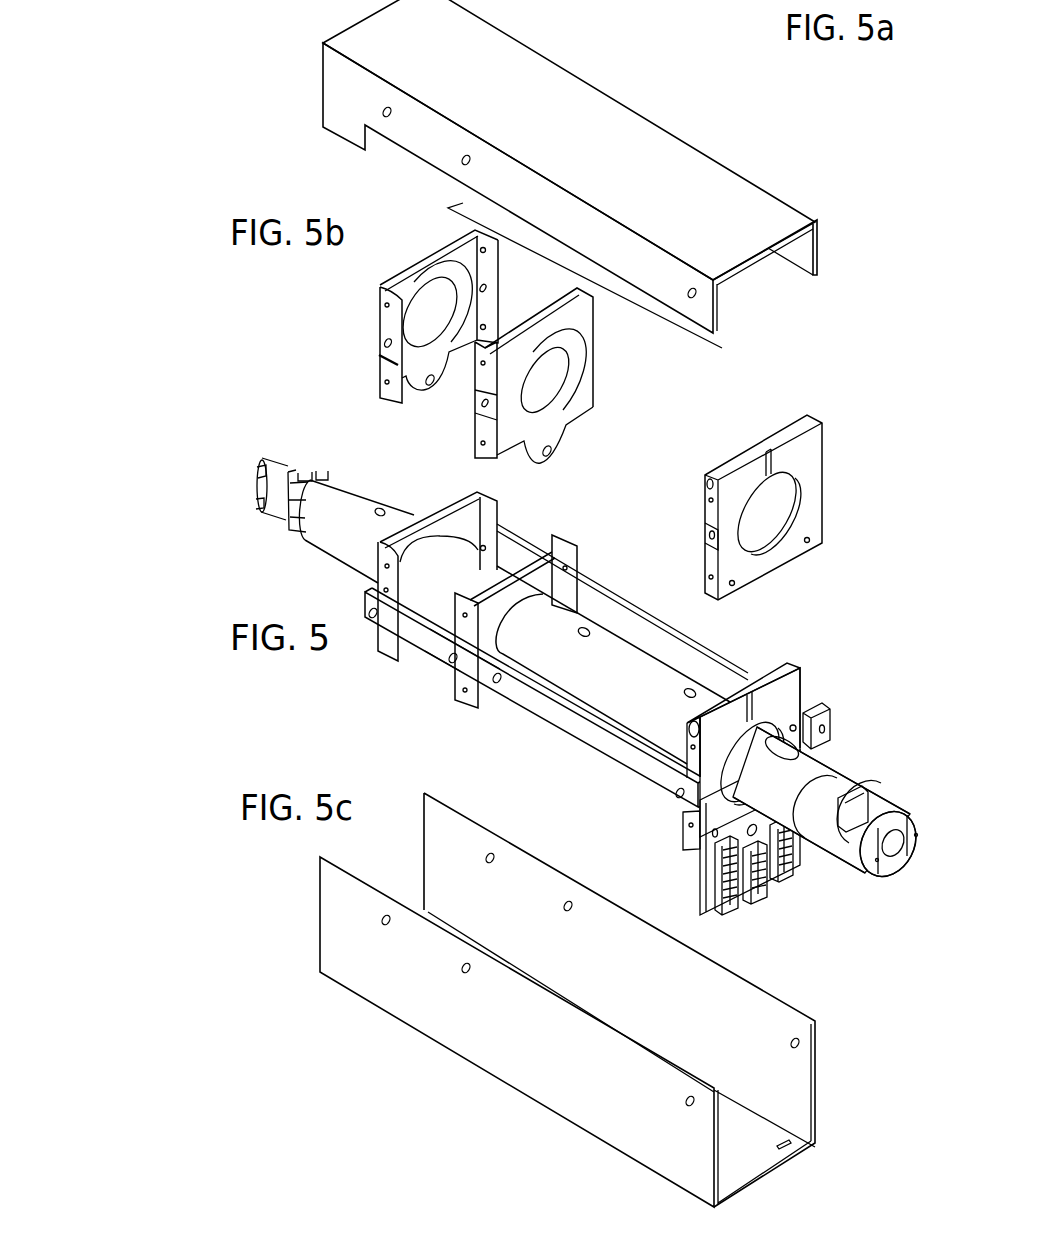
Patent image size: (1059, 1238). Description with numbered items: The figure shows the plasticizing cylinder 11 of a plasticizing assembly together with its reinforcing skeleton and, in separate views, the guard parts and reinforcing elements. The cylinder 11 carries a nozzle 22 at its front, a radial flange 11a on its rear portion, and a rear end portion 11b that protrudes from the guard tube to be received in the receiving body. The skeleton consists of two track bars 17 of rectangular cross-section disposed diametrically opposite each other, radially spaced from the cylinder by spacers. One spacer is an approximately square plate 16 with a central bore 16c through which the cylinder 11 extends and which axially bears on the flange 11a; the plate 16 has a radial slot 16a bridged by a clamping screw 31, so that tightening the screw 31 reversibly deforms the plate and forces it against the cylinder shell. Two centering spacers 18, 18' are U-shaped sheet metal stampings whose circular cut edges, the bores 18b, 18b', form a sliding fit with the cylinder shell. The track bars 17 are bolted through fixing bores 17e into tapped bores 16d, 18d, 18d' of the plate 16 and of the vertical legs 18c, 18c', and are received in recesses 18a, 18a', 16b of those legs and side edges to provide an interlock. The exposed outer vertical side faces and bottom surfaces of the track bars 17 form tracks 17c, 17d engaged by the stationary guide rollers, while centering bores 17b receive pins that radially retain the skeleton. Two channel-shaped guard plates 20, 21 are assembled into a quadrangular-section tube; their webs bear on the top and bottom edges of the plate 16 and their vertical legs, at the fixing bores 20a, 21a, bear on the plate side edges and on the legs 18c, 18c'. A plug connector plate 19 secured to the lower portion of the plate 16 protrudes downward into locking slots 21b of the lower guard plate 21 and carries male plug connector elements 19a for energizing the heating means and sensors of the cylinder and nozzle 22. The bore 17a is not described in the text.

In FIG. 5, the plasticizing cylinder 11 is at (350, 532).
In FIG. 5, the radial flange 11a is at (806, 709).
In FIG. 5, the rear end portion 11b is at (830, 778).
In FIG. 5b, the plate 16 is at (779, 494).
In FIG. 5, the plate 16 is at (754, 725).
In FIG. 5b, the radial slot 16a is at (760, 449).
In FIG. 5, the radial slot 16a is at (749, 696).
In FIG. 5b, the recess 16b is at (823, 485).
In FIG. 5b, the bore 16c is at (770, 540).
In FIG. 5b, the tapped bore 16d is at (708, 546).
In FIG. 5, the track bar 17 is at (521, 695).
In FIG. 5, the rail hole 17a is at (497, 683).
In FIG. 5, the centering bore 17b is at (687, 826).
In FIG. 5, the track 17c is at (425, 646).
In FIG. 5, the track 17d is at (440, 664).
In FIG. 5, the fixing bore 17e is at (372, 618).
In FIG. 5b, the centering spacer 18 is at (411, 298).
In FIG. 5, the centering spacer 18 is at (426, 585).
In FIG. 5b, the centering spacer 18' is at (546, 396).
In FIG. 5, the centering spacer 18' is at (541, 593).
In FIG. 5b, the recess 18a is at (429, 310).
In FIG. 5b, the recess 18a' is at (539, 396).
In FIG. 5b, the bore 18b is at (408, 291).
In FIG. 5b, the bore 18b' is at (586, 386).
In FIG. 5b, the vertical leg 18c is at (429, 319).
In FIG. 5, the vertical leg 18c is at (380, 620).
In FIG. 5b, the vertical leg 18c' is at (545, 387).
In FIG. 5b, the fixing bore 18d is at (336, 343).
In FIG. 5b, the fixing bore 18d' is at (457, 417).
In FIG. 5, the plug connector plate 19 is at (771, 867).
In FIG. 5, the male plug connector elements 19a is at (788, 880).
In FIG. 5a, the upper guard plate 20 is at (712, 191).
In FIG. 5a, the fixing bore 20a is at (698, 295).
In FIG. 5c, the lower guard plate 21 is at (512, 1057).
In FIG. 5c, the fixing bore 21a is at (799, 1047).
In FIG. 5c, the locking slot 21b is at (848, 1183).
In FIG. 5, the nozzle 22 is at (278, 478).
In FIG. 5, the screw 31 is at (690, 733).